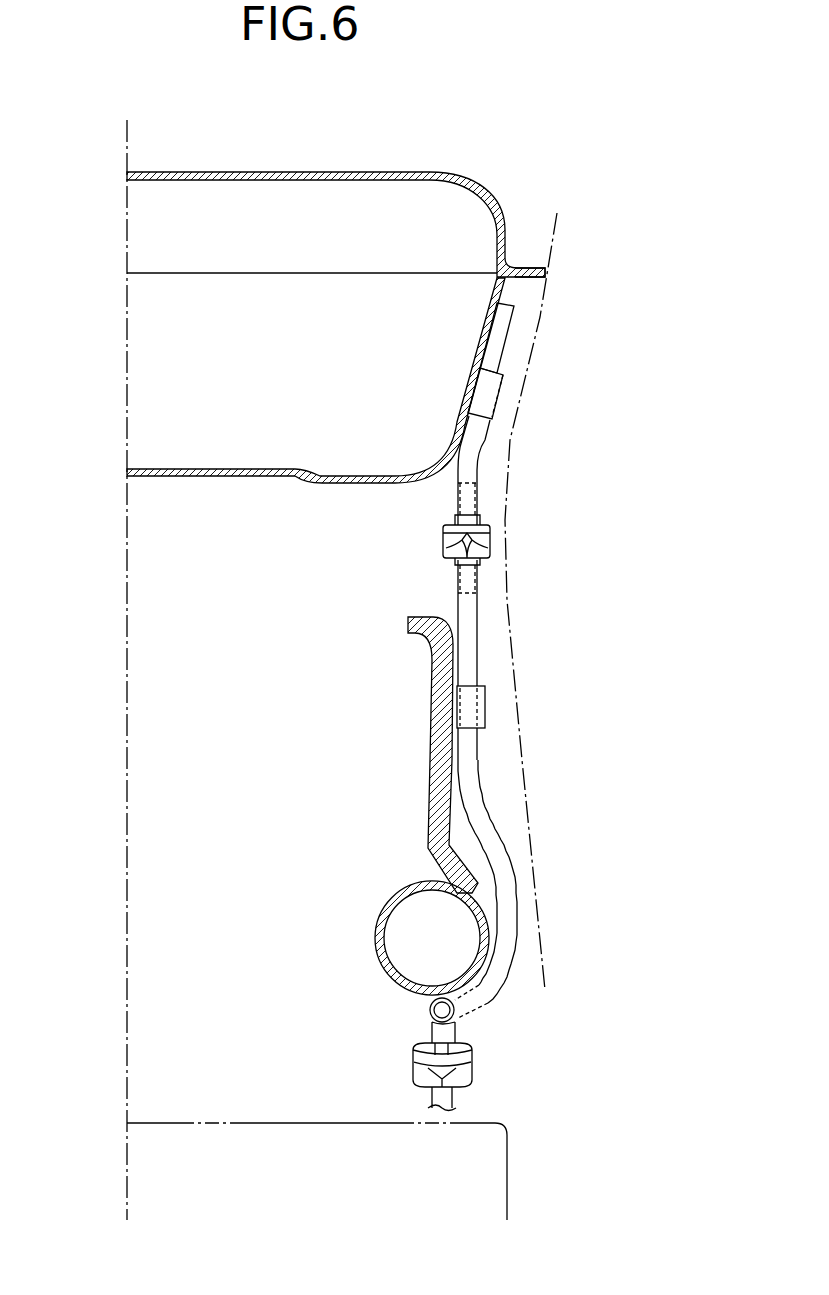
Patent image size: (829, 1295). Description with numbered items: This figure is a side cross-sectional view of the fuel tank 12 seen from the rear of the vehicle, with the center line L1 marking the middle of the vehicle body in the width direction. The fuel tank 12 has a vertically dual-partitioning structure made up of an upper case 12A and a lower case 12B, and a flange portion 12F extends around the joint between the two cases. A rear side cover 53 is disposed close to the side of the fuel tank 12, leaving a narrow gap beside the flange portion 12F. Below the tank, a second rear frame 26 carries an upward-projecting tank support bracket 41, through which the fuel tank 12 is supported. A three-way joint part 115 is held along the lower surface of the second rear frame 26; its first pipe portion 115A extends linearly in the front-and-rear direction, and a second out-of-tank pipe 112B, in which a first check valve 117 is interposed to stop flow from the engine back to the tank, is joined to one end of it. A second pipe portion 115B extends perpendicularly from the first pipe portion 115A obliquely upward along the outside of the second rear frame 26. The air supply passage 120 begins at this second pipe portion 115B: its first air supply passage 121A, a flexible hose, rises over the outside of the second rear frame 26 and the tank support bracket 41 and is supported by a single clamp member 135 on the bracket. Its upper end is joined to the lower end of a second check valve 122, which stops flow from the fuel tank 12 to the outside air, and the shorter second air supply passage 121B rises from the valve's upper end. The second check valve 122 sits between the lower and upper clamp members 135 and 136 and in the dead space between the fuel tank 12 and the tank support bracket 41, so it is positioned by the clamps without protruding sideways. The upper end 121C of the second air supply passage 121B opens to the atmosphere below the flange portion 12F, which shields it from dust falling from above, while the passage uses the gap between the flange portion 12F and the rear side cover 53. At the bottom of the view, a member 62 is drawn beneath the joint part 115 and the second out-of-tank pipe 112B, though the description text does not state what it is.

The center line of the vehicle body L1 is at (127, 654).
The fuel tank 12 is at (312, 170).
The upper case 12A is at (150, 226).
The lower case 12B is at (150, 338).
The flange portion 12F is at (527, 268).
The rear side cover 53 is at (558, 238).
The air supply passage 120 is at (495, 632).
The first air supply passage 121A is at (491, 822).
The second air supply passage 121B is at (481, 460).
The upper end (ambient air open end) 121C is at (506, 302).
The second check valve 122 is at (491, 545).
The clamp member 135 is at (488, 714).
The clamp member 136 is at (501, 392).
The tank support bracket 41 is at (427, 762).
The second rear frame 26 is at (387, 910).
The first pipe portion 115A is at (429, 1010).
The second pipe portion 115B is at (461, 1018).
The joint part 115 is at (464, 1030).
The first check valve 117 is at (474, 1078).
The second out-of-tank pipe 112B is at (431, 1097).
The floor panel 62 is at (510, 1195).